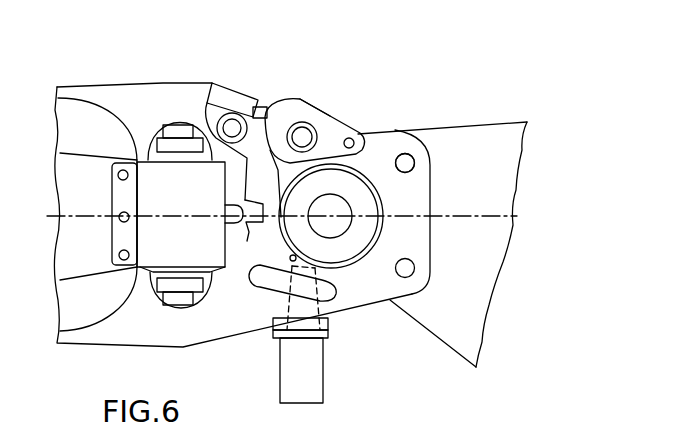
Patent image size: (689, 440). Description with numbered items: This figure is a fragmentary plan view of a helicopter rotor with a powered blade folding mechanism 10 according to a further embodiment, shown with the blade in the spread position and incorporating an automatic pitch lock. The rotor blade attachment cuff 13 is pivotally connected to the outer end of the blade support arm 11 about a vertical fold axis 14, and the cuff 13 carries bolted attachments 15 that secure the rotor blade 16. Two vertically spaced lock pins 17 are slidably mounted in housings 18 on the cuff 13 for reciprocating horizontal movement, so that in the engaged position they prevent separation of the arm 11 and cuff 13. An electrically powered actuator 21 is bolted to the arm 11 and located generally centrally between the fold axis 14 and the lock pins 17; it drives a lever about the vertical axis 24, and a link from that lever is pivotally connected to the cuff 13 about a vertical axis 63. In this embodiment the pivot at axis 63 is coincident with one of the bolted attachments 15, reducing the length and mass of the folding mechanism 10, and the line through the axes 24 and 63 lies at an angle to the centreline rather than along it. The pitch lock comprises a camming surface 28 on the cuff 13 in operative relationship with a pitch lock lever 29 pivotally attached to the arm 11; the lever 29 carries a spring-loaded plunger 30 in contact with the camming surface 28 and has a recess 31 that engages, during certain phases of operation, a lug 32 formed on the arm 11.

The blade folding mechanism 10 is at (344, 87).
The blade support arm 11 is at (108, 97).
The rotor blade attachment cuff 13 is at (373, 135).
The vertical fold axis 14 is at (302, 137).
The bolted attachments 15 is at (413, 165).
The rotor blade 16 is at (510, 140).
The lock pins 17 is at (318, 310).
The housings 18 is at (288, 370).
The electrically powered actuator 21 is at (370, 223).
The vertical axis 24 is at (330, 216).
The camming surface 28 is at (317, 100).
The pitch lock lever 29 is at (253, 177).
The spring-loaded plunger 30 is at (265, 107).
The recess 31 is at (248, 240).
The lug 32 is at (227, 222).
The vertical axis 63 is at (405, 163).